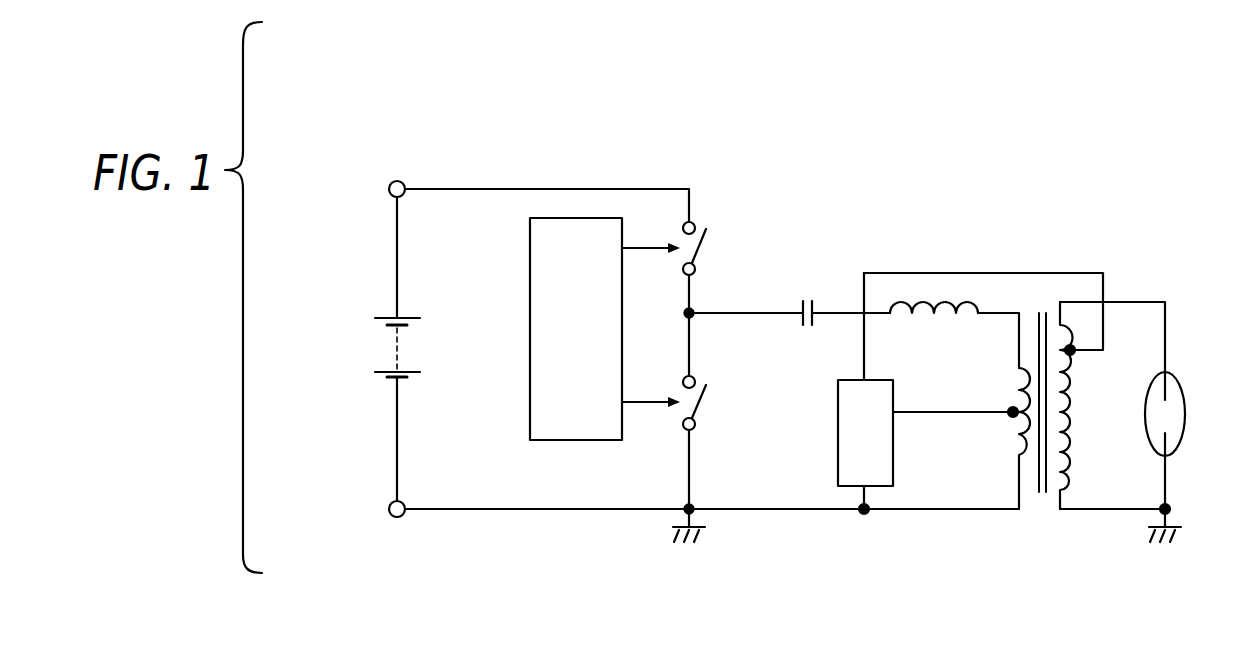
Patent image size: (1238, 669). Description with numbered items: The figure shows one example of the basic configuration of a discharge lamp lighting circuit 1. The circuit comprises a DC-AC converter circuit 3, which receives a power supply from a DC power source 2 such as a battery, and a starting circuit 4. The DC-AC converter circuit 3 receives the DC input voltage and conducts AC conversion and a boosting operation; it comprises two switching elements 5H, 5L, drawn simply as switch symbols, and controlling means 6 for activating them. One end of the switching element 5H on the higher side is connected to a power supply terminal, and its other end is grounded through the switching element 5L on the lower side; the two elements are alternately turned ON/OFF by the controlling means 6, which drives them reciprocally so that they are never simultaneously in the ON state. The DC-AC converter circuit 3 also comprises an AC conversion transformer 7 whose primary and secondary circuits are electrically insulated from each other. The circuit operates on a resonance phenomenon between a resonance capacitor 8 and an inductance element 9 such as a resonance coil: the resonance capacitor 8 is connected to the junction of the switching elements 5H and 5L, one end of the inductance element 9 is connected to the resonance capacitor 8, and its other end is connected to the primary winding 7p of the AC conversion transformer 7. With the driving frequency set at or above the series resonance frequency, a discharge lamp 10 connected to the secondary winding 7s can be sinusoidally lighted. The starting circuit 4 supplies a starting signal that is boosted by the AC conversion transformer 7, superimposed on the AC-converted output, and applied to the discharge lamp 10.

The discharge lamp lighting circuit 1 is at (462, 108).
The DC power source 2 is at (380, 316).
The DC-AC converter circuit 3 is at (698, 310).
The starting circuit 4 is at (838, 447).
The switching element on the higher side 5H is at (700, 248).
The switching element on the lower side 5L is at (703, 408).
The controlling means 6 is at (530, 403).
The AC conversion transformer 7 is at (1045, 474).
The primary winding 7p is at (1030, 468).
The secondary winding 7s is at (1057, 470).
The resonance capacitor 8 is at (816, 312).
The inductance element 9 is at (938, 318).
The discharge lamp 10 is at (1183, 378).